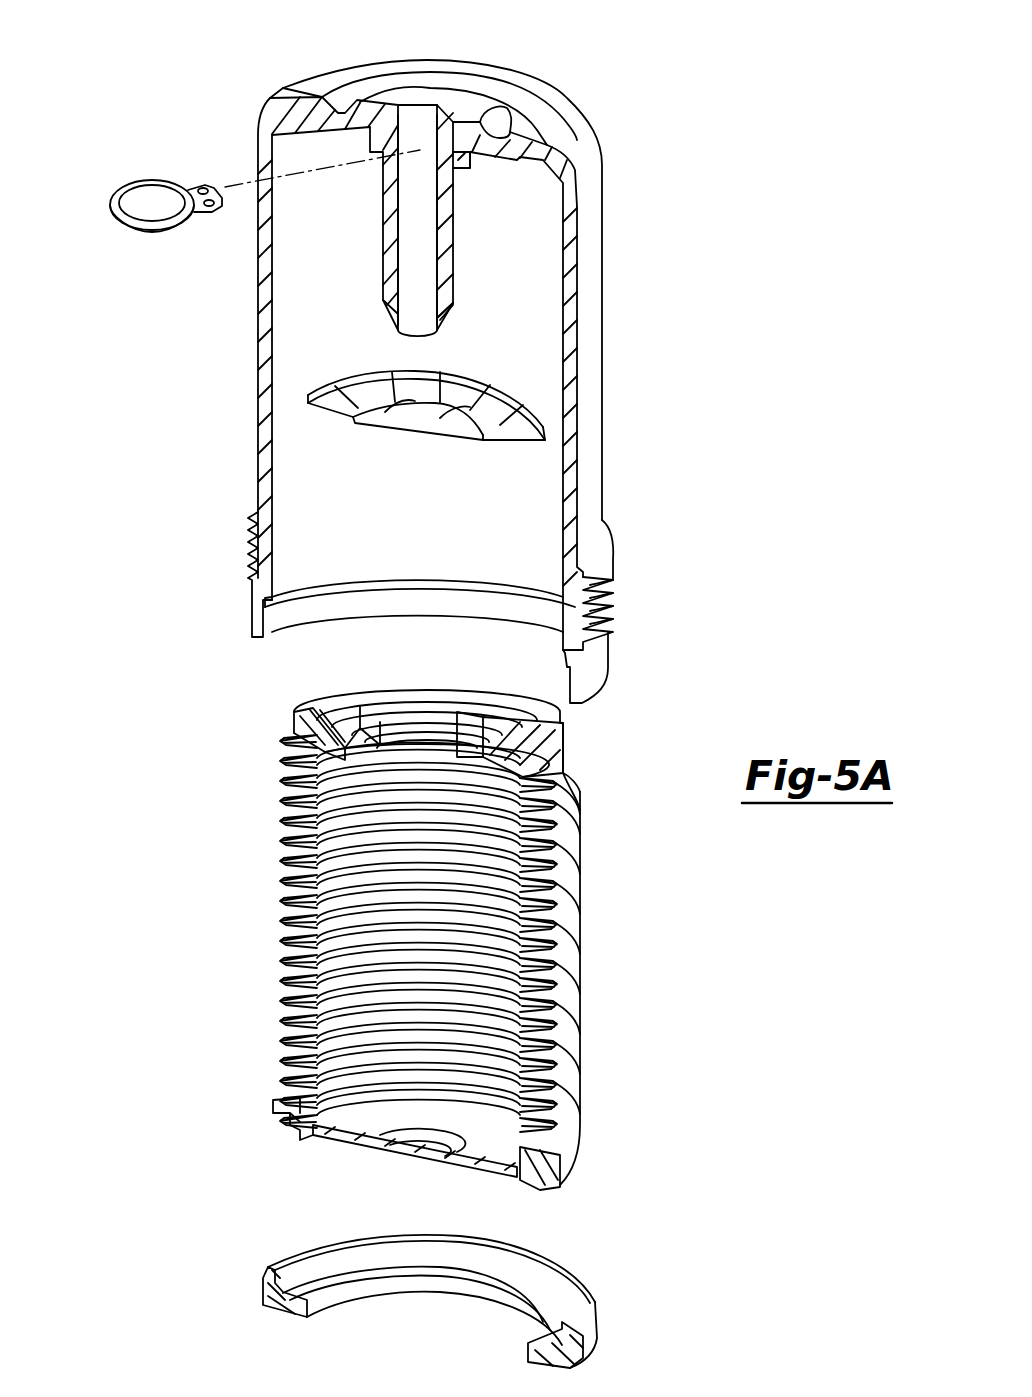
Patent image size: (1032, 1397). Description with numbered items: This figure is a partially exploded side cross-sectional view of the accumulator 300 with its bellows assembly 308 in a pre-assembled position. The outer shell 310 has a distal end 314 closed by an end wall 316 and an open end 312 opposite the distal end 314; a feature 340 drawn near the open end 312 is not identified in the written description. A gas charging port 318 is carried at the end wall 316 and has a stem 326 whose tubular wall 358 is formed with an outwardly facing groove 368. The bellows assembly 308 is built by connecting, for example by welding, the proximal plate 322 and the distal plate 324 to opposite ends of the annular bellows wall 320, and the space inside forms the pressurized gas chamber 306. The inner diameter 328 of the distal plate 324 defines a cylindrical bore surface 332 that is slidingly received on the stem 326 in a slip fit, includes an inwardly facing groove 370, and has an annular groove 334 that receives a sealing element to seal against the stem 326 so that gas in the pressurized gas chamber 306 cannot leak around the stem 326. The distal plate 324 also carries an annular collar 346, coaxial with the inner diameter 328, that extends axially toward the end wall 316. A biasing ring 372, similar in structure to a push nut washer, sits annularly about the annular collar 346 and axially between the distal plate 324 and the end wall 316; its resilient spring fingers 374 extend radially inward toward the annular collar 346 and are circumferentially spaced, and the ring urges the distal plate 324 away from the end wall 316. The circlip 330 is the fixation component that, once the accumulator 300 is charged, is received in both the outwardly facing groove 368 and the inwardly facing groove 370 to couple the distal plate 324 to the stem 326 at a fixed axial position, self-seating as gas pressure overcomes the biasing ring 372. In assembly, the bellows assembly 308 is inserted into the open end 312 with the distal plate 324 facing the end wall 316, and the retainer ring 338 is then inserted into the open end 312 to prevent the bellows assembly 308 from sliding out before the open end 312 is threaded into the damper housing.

The accumulator 300 is at (618, 102).
The pressurized gas chamber 306 is at (375, 1015).
The bellows assembly 308 is at (262, 911).
The outer shell 310 is at (266, 380).
The open end 312 is at (256, 642).
The distal end 314 is at (316, 80).
The end wall 316 is at (456, 124).
The gas charging port 318 is at (420, 296).
The annular bellows wall 320 is at (555, 905).
The proximal plate 322 is at (346, 1140).
The distal plate 324 is at (305, 757).
The stem 326 is at (456, 320).
The inner diameter 328 is at (393, 700).
The circlip 330 is at (150, 182).
The cylindrical bore surface 332 is at (446, 730).
The annular groove 334 is at (425, 736).
The retainer ring 338 is at (266, 1299).
The threaded collar 340 is at (600, 592).
The annular collar 346 is at (540, 752).
The tubular wall 358 is at (385, 255).
The outwardly facing groove 368 is at (472, 174).
The inwardly facing groove 370 is at (371, 710).
The biasing ring 372 is at (530, 400).
The spring fingers 374 is at (440, 430).